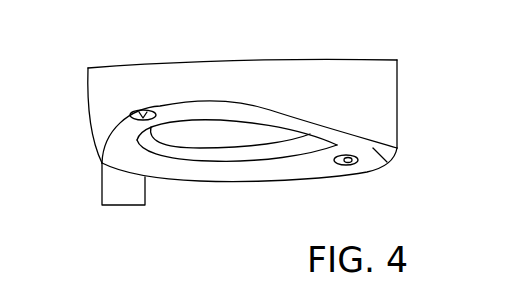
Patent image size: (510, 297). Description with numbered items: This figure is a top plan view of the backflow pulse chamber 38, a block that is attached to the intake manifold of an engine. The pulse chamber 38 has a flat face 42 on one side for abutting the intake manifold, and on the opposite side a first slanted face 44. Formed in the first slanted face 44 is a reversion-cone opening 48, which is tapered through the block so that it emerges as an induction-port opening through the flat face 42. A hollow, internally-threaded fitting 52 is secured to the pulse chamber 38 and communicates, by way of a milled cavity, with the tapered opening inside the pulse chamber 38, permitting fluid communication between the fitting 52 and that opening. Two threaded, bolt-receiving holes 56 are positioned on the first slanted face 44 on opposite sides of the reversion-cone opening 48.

The backflow pulse chamber 38 is at (106, 98).
The flat face 42 is at (225, 58).
The first slanted face 44 is at (392, 162).
The reversion-cone opening 48 is at (220, 154).
The hollow, internally-threaded fitting 52 is at (117, 193).
The threaded bolt-receiving holes 56 is at (138, 110).